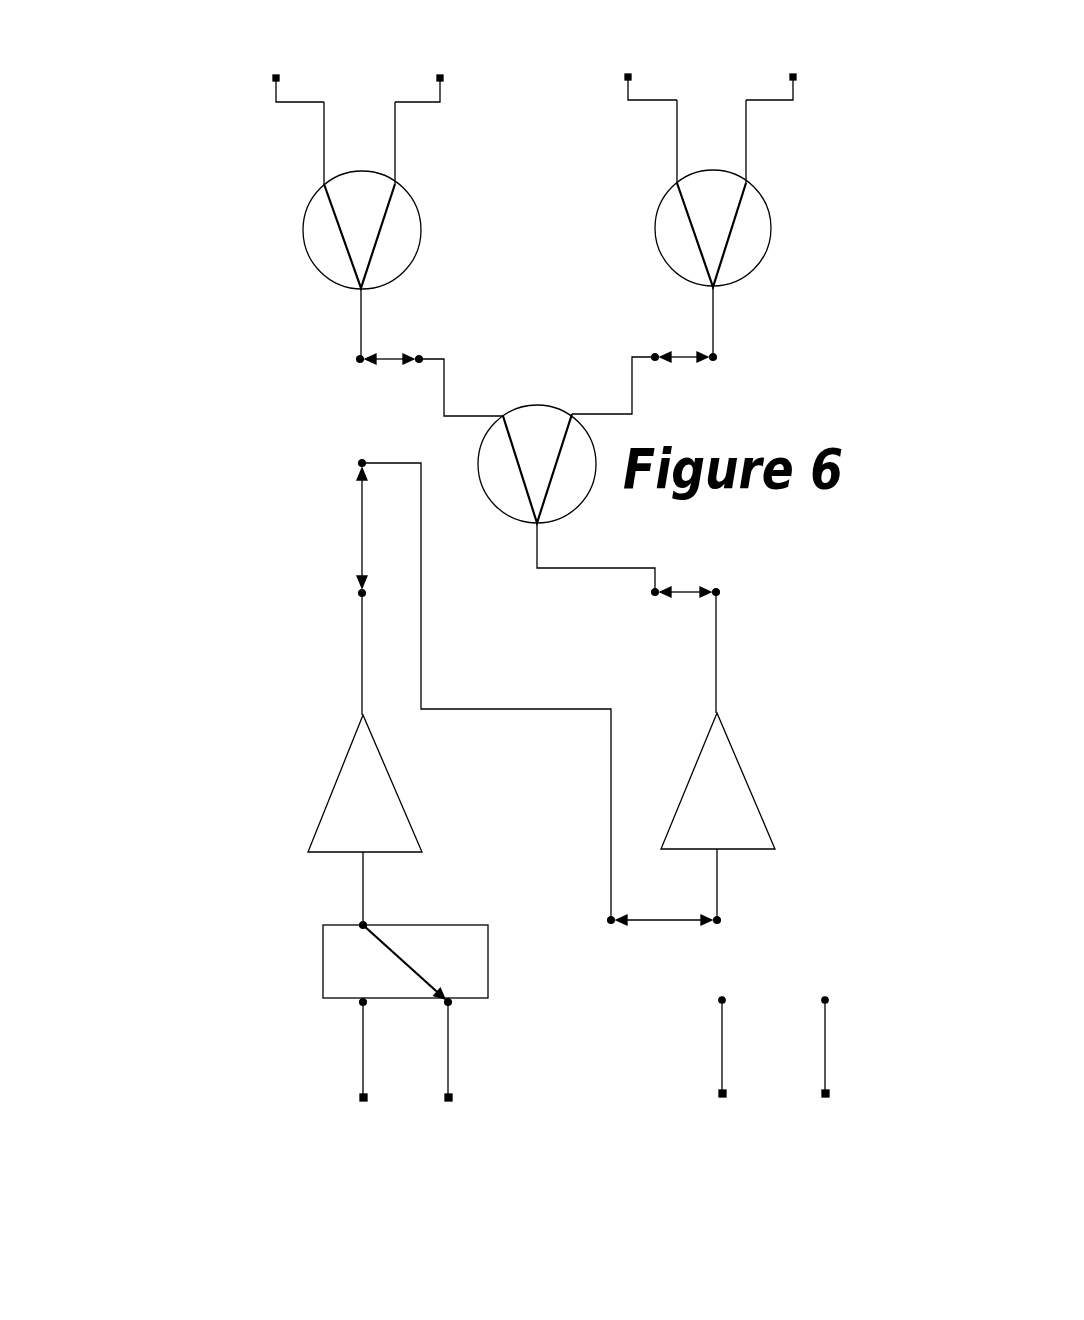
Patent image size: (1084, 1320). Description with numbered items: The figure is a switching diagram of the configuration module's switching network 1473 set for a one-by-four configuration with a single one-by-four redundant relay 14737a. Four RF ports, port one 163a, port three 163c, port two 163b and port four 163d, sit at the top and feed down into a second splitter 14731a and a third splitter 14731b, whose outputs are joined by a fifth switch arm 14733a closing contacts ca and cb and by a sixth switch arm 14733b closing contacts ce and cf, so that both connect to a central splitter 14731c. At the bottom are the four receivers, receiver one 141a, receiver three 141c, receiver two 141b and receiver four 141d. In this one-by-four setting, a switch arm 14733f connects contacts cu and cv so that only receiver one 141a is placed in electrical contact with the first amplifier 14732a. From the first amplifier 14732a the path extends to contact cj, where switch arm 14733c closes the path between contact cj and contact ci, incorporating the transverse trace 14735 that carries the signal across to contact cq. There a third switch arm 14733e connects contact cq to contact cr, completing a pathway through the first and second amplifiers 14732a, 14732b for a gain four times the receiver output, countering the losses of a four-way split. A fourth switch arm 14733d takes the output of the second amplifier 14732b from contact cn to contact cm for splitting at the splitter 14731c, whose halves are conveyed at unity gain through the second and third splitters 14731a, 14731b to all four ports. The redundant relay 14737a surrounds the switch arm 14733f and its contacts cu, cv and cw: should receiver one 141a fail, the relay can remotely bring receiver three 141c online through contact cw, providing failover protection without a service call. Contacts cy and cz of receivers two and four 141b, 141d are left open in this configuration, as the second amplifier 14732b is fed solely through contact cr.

The configuration module switching network 1473 is at (152, 124).
The port 1 163a is at (302, 38).
The port 2 163b is at (655, 36).
The port 3 163c is at (468, 38).
The port 4 163d is at (820, 36).
The second splitter 14731a is at (303, 212).
The third splitter 14731b is at (656, 210).
The splitter 14731c is at (555, 403).
The fifth switch arm 14733a is at (406, 352).
The sixth switch arm 14733b is at (668, 348).
The switch arm 14733c is at (358, 520).
The fourth switch arm 14733d is at (687, 587).
The third electrical switch arm 14733e is at (642, 917).
The switch arm 14733f is at (388, 950).
The transverse trace 14735 is at (538, 708).
The first amplifier 14732a is at (348, 745).
The second amplifier 14732b is at (772, 752).
The redundant relay 14737a is at (467, 925).
The receiver 1 141a is at (380, 1146).
The receiver 2 141b is at (748, 1143).
The receiver 3 141c is at (465, 1147).
The receiver 4 141d is at (852, 1141).
The contact ca is at (357, 361).
The contact cb is at (417, 366).
The contact ce is at (659, 362).
The contact cf is at (716, 358).
The contact ci is at (359, 460).
The contact cj is at (358, 595).
The contact cm is at (653, 594).
The contact cn is at (720, 591).
The contact cq is at (609, 923).
The contact cr is at (721, 924).
The contact cu is at (360, 922).
The contact cv is at (367, 1004).
The contact cw is at (452, 1003).
The contact cy is at (726, 1001).
The contact cz is at (829, 1001).